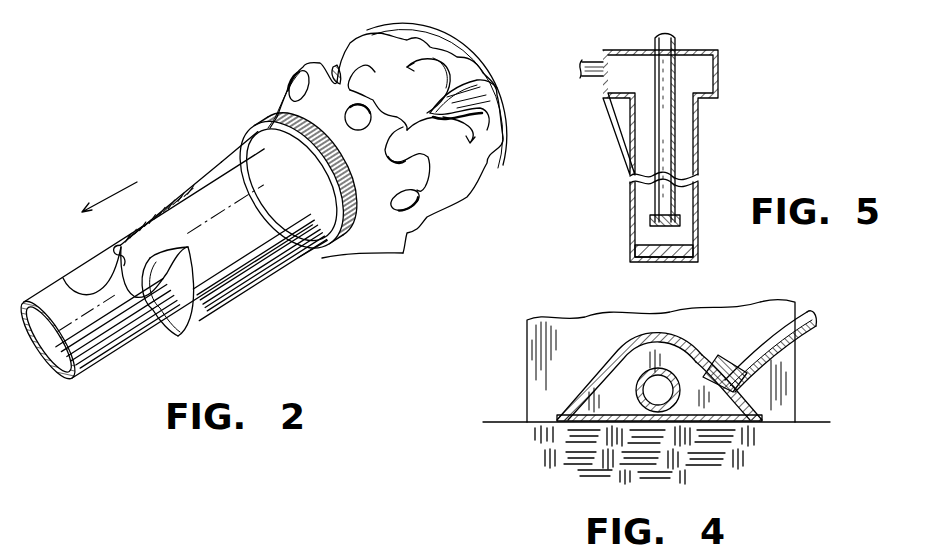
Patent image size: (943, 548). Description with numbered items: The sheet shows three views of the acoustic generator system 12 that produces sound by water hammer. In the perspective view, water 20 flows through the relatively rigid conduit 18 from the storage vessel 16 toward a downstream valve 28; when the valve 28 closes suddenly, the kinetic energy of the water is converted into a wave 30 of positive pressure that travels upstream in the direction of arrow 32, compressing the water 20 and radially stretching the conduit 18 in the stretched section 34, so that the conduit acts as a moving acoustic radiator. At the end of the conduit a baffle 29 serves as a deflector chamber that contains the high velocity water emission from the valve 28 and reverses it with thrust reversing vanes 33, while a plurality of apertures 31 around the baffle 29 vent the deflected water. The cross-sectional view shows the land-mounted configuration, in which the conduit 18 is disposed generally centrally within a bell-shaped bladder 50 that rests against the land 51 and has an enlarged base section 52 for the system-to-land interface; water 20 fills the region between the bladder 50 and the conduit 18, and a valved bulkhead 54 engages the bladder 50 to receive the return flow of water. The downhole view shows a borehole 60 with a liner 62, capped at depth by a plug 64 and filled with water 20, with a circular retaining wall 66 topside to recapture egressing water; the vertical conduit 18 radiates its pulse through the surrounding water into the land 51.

In FIG. 5, the acoustic generator system 12 is at (678, 154).
In FIG. 4, the acoustic generator system 12 is at (511, 392).
In FIG. 4, the storage vessel 16 is at (659, 326).
In FIG. 2, the conduit 18 is at (107, 338).
In FIG. 5, the conduit 18 is at (655, 127).
In FIG. 4, the conduit 18 is at (676, 382).
In FIG. 2, the water 20 is at (196, 188).
In FIG. 5, the water 20 is at (640, 205).
In FIG. 4, the water 20 is at (748, 397).
In FIG. 2, the downstream valve 28 is at (340, 247).
In FIG. 5, the downstream valve 28 is at (650, 224).
In FIG. 2, the baffle 29 is at (297, 108).
In FIG. 2, the wave of positive pressure 30 is at (207, 313).
In FIG. 2, the apertures 31 is at (360, 117).
In FIG. 2, the arrow 32 is at (115, 190).
In FIG. 2, the thrust reversing vanes 33 is at (407, 130).
In FIG. 2, the stretched section of conduit 34 is at (298, 250).
In FIG. 4, the bladder 50 is at (604, 372).
In FIG. 5, the land 51 is at (760, 153).
In FIG. 4, the land 51 is at (812, 450).
In FIG. 4, the enlarged base section 52 is at (578, 422).
In FIG. 4, the valved bulkhead 54 is at (665, 364).
In FIG. 5, the borehole 60 is at (700, 238).
In FIG. 5, the liner 62 is at (700, 184).
In FIG. 5, the plug 64 is at (636, 255).
In FIG. 5, the retaining wall 66 is at (718, 57).